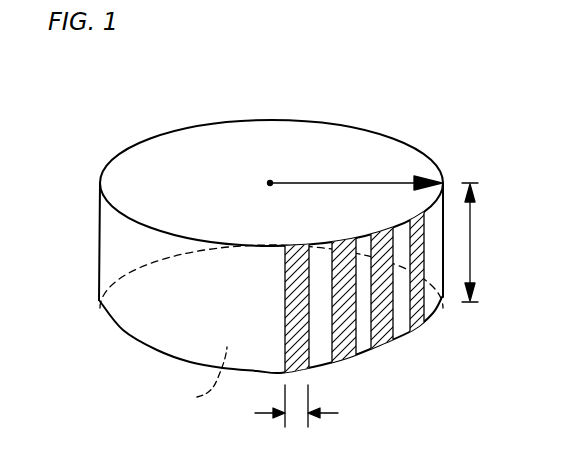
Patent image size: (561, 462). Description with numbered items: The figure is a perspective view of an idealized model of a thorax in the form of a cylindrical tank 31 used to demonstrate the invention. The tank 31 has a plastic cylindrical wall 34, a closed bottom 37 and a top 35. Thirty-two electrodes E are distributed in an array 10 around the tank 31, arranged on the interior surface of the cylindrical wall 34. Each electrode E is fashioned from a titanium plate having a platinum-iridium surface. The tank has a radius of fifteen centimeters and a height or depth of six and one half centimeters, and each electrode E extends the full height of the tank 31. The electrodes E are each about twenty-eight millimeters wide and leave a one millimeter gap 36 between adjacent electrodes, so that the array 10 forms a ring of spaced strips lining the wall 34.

The electrode array 10 is at (405, 137).
The cylindrical tank 31 is at (168, 128).
The top 35 is at (242, 132).
The cylindrical wall 34 is at (147, 336).
The gap 36 is at (383, 335).
The closed bottom 37 is at (195, 378).
The electrode E is at (390, 342).